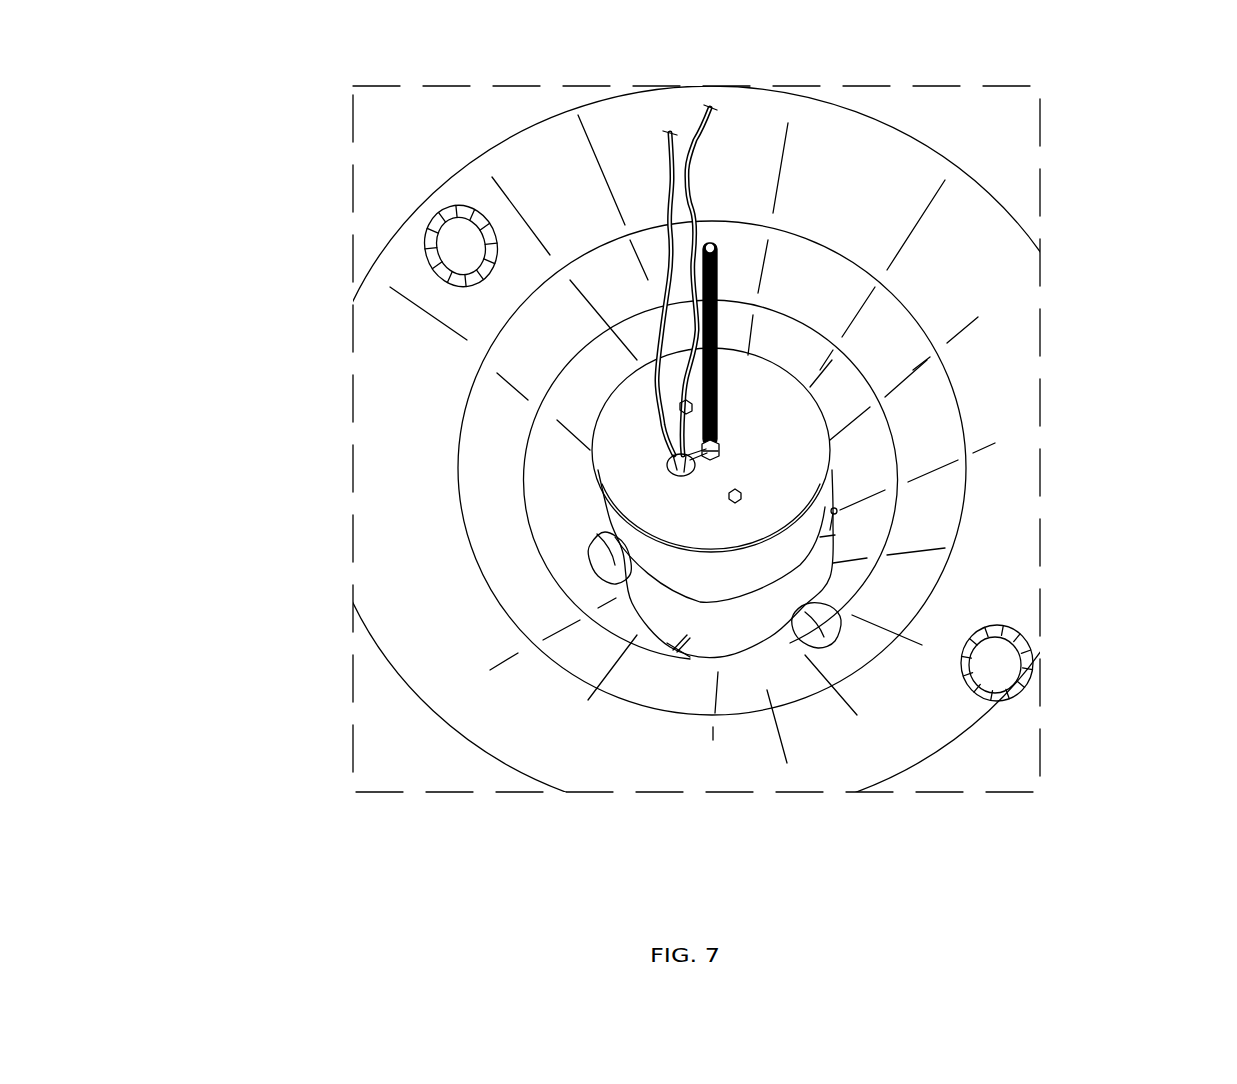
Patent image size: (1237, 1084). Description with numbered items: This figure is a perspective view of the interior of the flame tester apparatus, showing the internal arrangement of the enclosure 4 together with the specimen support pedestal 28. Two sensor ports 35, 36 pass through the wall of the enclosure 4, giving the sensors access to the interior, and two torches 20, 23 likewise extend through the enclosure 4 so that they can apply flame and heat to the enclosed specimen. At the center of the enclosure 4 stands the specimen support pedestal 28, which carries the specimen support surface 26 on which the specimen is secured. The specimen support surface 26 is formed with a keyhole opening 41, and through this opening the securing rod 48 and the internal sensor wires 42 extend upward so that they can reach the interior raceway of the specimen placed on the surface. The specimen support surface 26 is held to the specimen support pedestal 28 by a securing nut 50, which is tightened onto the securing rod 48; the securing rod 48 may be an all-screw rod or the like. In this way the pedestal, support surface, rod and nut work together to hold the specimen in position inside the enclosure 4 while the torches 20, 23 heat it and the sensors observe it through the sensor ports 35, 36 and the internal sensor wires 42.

The enclosure 4 is at (490, 157).
The torch 20 is at (593, 511).
The torch 23 is at (805, 615).
The specimen support surface 26 is at (777, 490).
The specimen support pedestal 28 is at (717, 577).
The sensor port 35 is at (470, 257).
The sensor port 36 is at (980, 668).
The keyhole opening 41 is at (670, 458).
The internal sensor wires 42 is at (670, 133).
The securing rod 48 is at (715, 258).
The securing nut 50 is at (722, 441).